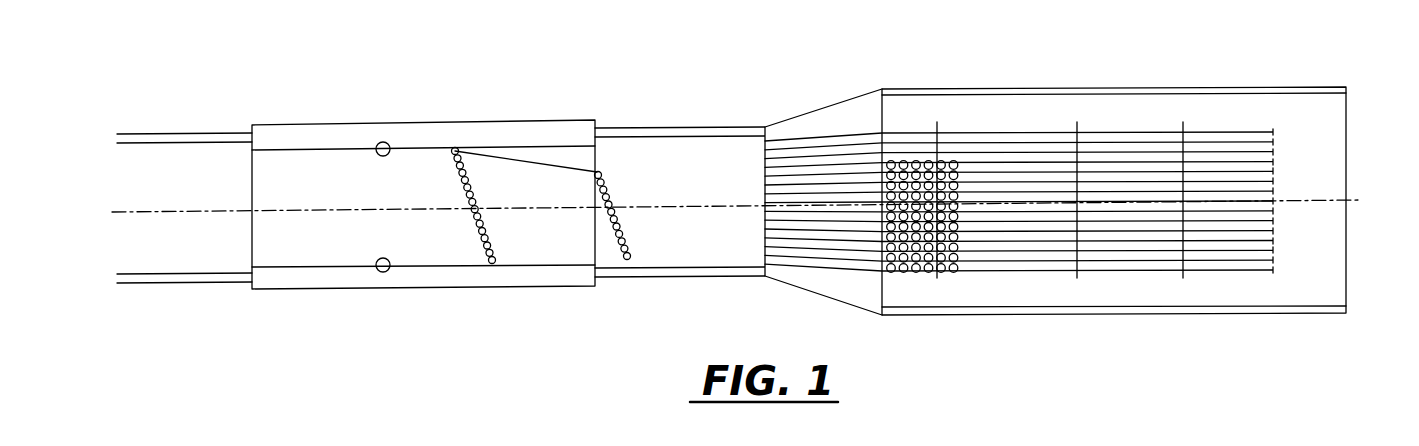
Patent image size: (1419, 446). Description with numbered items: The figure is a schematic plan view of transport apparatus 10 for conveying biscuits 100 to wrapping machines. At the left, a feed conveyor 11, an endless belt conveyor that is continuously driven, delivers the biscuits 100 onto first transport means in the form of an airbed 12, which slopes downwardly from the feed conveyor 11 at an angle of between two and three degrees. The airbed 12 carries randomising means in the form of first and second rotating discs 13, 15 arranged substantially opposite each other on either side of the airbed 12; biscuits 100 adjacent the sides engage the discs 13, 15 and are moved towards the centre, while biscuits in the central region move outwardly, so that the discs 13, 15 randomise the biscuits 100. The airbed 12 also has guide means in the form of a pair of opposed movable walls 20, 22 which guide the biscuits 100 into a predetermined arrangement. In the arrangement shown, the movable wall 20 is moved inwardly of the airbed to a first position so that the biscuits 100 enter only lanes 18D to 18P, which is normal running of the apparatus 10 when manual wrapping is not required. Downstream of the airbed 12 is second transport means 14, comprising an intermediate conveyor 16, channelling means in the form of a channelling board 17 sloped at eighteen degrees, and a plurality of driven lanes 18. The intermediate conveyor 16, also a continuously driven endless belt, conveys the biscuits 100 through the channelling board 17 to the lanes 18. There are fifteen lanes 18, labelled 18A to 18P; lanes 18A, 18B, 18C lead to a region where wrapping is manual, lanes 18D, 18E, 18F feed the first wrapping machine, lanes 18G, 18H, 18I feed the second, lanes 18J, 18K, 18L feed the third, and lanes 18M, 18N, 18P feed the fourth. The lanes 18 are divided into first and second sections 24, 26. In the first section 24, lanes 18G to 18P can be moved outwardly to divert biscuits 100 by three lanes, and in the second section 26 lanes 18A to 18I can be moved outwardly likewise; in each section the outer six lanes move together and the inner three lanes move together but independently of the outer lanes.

The transport apparatus 10 is at (592, 106).
The feed conveyor 11 is at (203, 163).
The airbed 12 is at (425, 128).
The first rotating disc 13 is at (381, 142).
The second transport means 14 is at (875, 80).
The second rotating disc 15 is at (377, 271).
The intermediate conveyor 16 is at (685, 160).
The channelling board 17 is at (828, 160).
The lanes 18 is at (1013, 120).
The lane 18A is at (1270, 135).
The lane 18B is at (1273, 143).
The lane 18C is at (1273, 153).
The lane 18D is at (1273, 163).
The lane 18E is at (1273, 172).
The lane 18F is at (1273, 182).
The lane 18G is at (1273, 192).
The lane 18H is at (1273, 202).
The lane 18I is at (1273, 212).
The lane 18J is at (1273, 222).
The lane 18K is at (1273, 232).
The lane 18L is at (1265, 240).
The lane 18M is at (1257, 250).
The lane 18N is at (1247, 260).
The lane 18P is at (1222, 272).
The movable wall 20 is at (503, 160).
The movable wall 22 is at (545, 252).
The first section 24 is at (960, 132).
The second section 26 is at (1115, 133).
The biscuits 100 is at (478, 232).